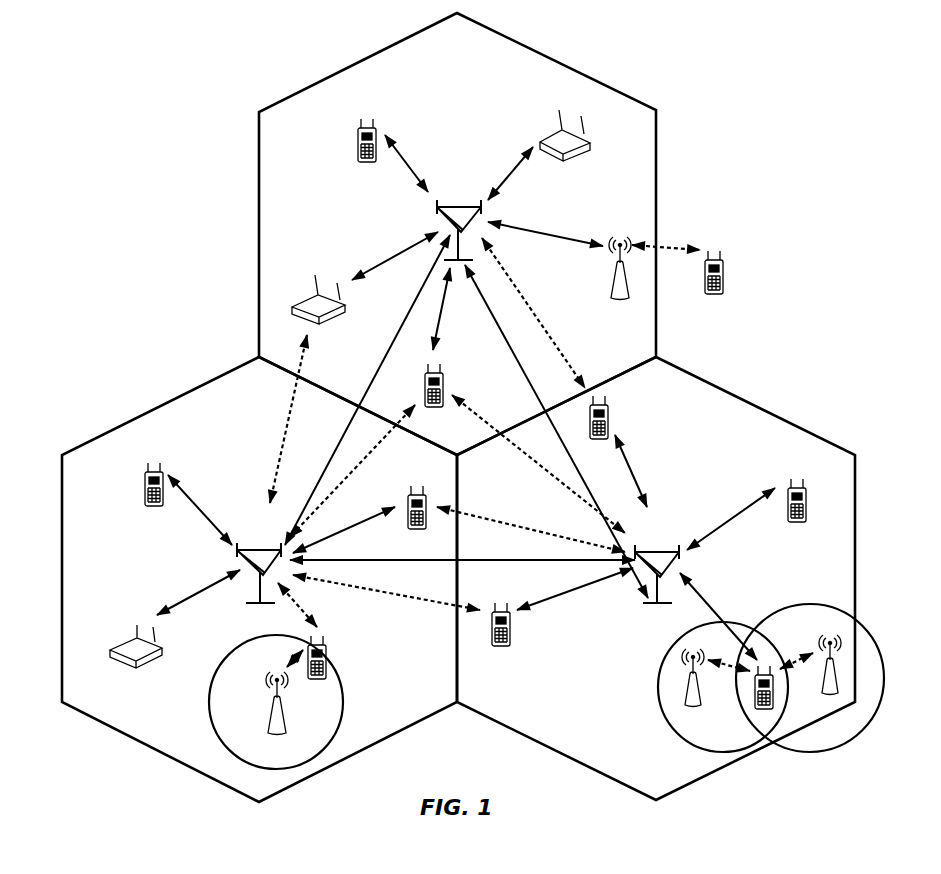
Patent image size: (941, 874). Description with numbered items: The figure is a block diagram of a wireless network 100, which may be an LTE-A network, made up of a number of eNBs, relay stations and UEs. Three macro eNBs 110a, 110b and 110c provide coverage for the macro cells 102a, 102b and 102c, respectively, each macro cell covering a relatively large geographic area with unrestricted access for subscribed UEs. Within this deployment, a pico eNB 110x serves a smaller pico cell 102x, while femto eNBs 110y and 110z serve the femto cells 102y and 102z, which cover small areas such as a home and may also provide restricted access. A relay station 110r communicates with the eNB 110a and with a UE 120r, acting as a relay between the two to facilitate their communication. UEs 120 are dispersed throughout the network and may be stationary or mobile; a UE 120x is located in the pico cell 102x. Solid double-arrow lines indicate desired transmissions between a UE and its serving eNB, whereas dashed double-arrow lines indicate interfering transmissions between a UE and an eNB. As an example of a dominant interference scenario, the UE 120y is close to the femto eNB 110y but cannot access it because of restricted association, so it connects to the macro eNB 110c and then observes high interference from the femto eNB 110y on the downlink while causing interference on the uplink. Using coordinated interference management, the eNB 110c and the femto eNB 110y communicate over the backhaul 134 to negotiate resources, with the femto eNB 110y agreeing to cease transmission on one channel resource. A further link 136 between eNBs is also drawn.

The wireless network 100 is at (790, 77).
The macro cell 102a is at (560, 62).
The macro cell 102b is at (160, 406).
The macro cell 102c is at (760, 407).
The pico cell 102x is at (230, 650).
The femto cell 102y is at (661, 656).
The femto cell 102z is at (808, 604).
The macro eNB 110a is at (456, 206).
The macro eNB 110b is at (252, 549).
The macro eNB 110c is at (660, 551).
The relay station 110r is at (610, 285).
The pico eNB 110x is at (285, 728).
The femto eNB 110y is at (702, 700).
The femto eNB 110z is at (832, 690).
The UE 120 is at (358, 133).
The UE 120r is at (723, 287).
The UE 120x is at (327, 655).
The UE 120y is at (755, 703).
The backhaul 134 is at (362, 386).
The backhaul communication link between base stations 136 is at (523, 387).